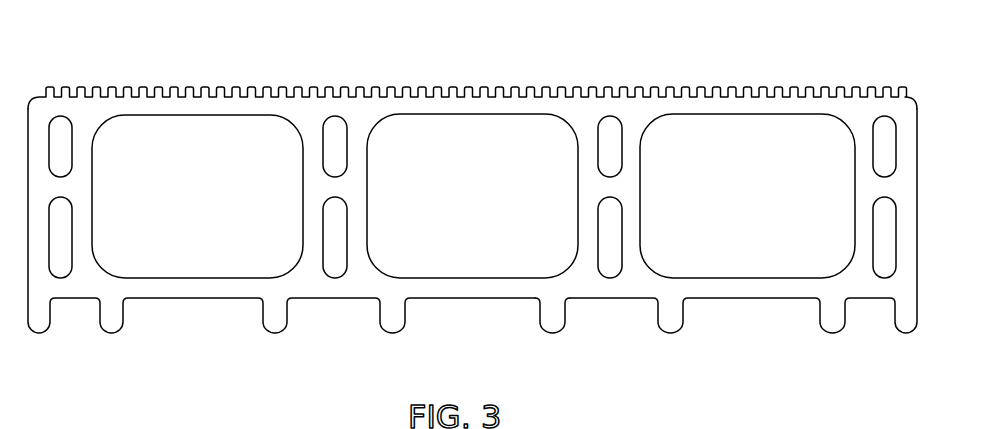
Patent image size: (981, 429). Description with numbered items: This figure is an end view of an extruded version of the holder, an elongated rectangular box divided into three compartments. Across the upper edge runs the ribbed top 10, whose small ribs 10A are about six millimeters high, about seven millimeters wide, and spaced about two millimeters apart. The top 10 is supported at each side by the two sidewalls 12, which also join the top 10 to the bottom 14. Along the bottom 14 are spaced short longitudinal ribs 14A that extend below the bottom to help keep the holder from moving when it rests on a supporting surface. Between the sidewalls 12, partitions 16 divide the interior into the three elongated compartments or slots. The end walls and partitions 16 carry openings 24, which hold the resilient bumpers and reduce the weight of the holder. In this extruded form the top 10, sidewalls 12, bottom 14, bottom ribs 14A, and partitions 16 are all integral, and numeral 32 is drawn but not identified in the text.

The ribbed top 10 is at (472, 205).
The small ribs 10A is at (133, 88).
The sidewalls 12 is at (90, 213).
The bottom 14 is at (472, 254).
The longitudinal ribs 14A is at (552, 317).
The partitions 16 is at (472, 144).
The openings 24 is at (606, 133).
The reference element 32 is at (218, 428).